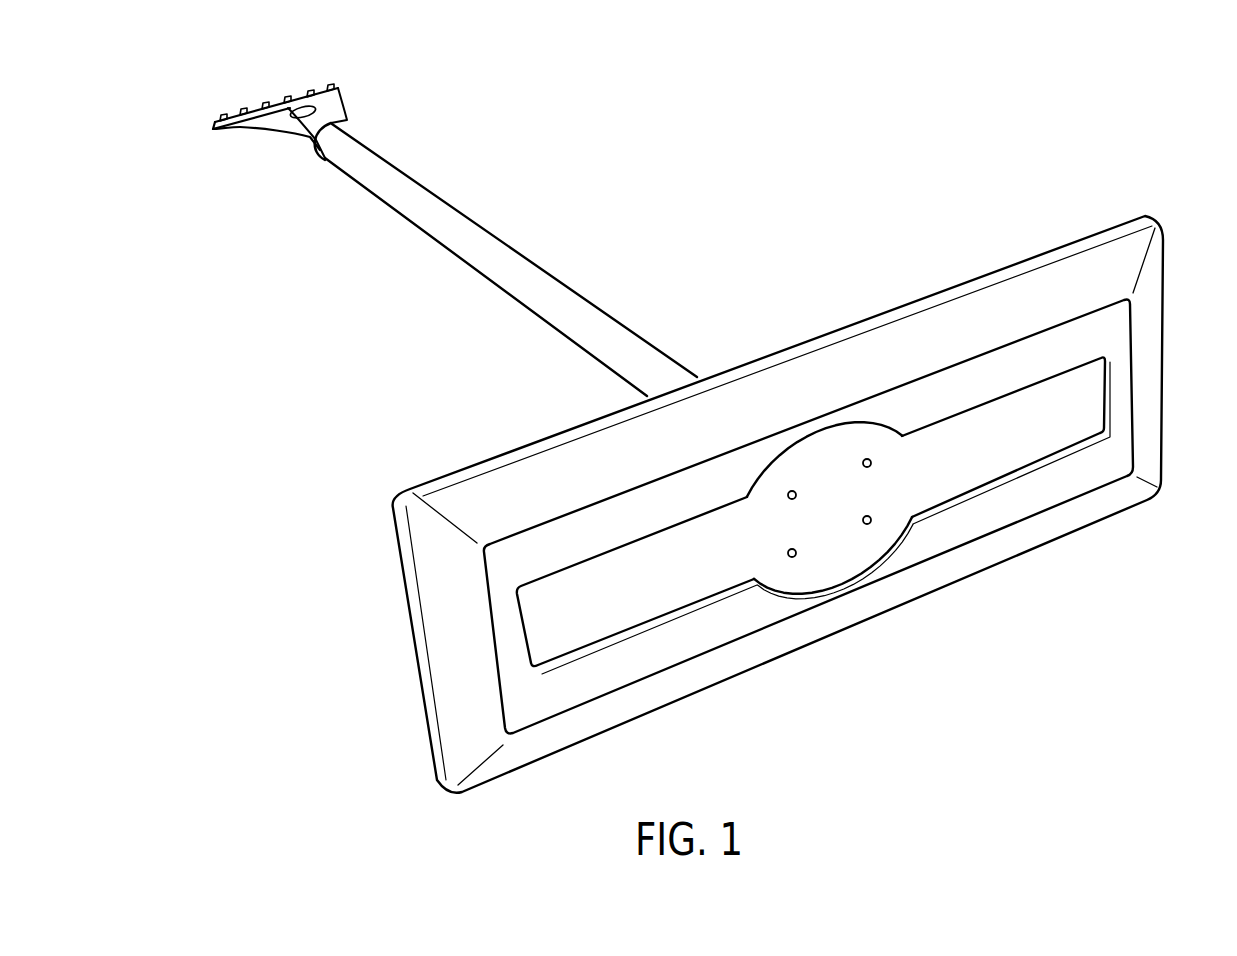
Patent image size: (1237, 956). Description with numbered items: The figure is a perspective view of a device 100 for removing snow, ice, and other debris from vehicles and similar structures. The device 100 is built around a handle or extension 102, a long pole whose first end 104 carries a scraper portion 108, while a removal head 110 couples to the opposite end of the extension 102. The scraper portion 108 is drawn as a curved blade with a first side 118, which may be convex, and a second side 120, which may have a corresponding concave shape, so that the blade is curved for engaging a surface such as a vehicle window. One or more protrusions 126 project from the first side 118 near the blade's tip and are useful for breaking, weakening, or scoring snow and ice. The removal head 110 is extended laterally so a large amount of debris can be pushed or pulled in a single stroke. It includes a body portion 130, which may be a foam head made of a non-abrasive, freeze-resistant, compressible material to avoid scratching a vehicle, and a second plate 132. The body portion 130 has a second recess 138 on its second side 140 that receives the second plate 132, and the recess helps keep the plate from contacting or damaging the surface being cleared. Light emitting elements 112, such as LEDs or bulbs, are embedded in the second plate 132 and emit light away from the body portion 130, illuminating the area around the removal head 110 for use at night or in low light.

The device 100 is at (769, 104).
The extension 102 is at (612, 258).
The first end 104 is at (347, 132).
The scraper portion 108 is at (237, 127).
The removal head 110 is at (388, 497).
The light emitting elements 112 is at (871, 462).
The first side 118 is at (337, 102).
The second side 120 is at (272, 137).
The protrusions 126 is at (307, 88).
The body portion 130 is at (1165, 283).
The second plate 132 is at (705, 578).
The second recess 138 is at (903, 530).
The second side 140 is at (1077, 478).